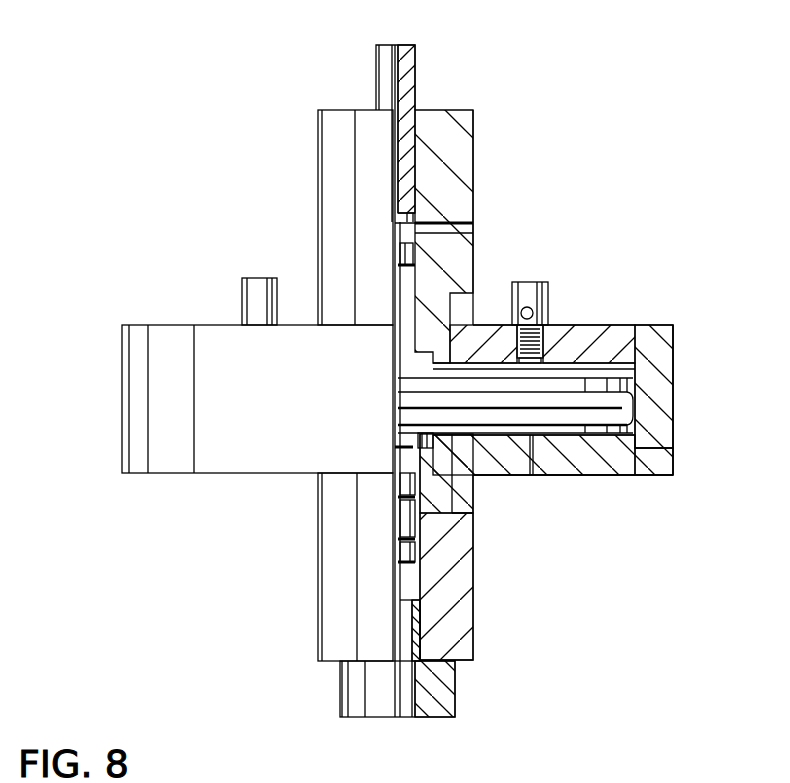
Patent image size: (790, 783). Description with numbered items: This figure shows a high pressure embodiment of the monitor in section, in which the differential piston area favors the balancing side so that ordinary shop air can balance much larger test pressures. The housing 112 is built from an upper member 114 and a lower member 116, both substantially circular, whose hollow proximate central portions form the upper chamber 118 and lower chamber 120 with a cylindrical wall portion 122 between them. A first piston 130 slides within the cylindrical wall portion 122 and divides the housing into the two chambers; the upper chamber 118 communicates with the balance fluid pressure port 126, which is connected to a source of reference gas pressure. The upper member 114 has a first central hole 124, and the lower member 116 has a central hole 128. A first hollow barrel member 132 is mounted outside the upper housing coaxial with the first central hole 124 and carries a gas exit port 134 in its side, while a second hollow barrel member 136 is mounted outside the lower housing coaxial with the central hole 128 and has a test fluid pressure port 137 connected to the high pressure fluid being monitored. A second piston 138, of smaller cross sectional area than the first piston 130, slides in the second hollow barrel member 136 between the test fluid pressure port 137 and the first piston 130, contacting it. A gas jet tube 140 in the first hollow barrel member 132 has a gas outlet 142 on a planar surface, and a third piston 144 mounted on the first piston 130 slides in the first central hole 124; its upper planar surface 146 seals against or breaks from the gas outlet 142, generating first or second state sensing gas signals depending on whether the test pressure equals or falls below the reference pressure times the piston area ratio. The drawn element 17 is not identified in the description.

The set screw 17 is at (531, 283).
The housing 112 is at (105, 436).
The upper member 114 is at (575, 332).
The lower member 116 is at (657, 478).
The upper chamber 118 is at (672, 325).
The lower chamber 120 is at (592, 430).
The cylindrical wall portion 122 is at (677, 398).
The first central hole 124 is at (472, 242).
The balance fluid pressure port 126 is at (245, 295).
The central hole 128 is at (420, 542).
The first piston 130 is at (580, 378).
The first hollow barrel member 132 is at (468, 120).
The gas exit port 134 is at (443, 232).
The second hollow barrel member 136 is at (473, 527).
The test fluid pressure port 137 is at (403, 713).
The second piston 138 is at (400, 505).
The gas jet tube 140 is at (415, 70).
The gas outlet 142 is at (393, 217).
The third piston 144 is at (393, 293).
The upper planar surface 146 is at (416, 220).